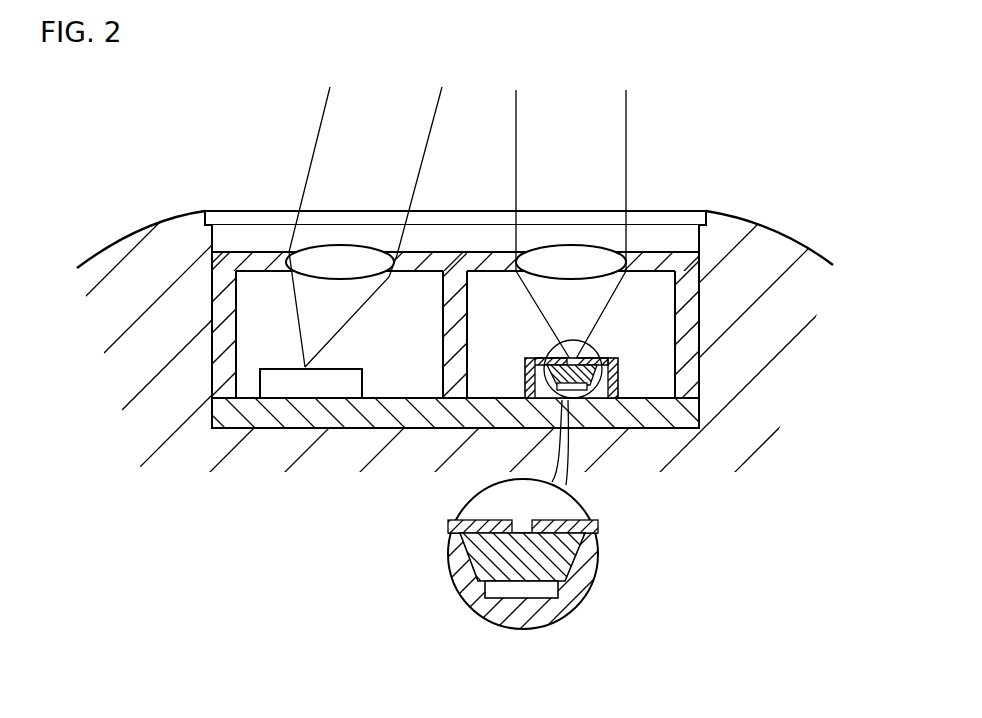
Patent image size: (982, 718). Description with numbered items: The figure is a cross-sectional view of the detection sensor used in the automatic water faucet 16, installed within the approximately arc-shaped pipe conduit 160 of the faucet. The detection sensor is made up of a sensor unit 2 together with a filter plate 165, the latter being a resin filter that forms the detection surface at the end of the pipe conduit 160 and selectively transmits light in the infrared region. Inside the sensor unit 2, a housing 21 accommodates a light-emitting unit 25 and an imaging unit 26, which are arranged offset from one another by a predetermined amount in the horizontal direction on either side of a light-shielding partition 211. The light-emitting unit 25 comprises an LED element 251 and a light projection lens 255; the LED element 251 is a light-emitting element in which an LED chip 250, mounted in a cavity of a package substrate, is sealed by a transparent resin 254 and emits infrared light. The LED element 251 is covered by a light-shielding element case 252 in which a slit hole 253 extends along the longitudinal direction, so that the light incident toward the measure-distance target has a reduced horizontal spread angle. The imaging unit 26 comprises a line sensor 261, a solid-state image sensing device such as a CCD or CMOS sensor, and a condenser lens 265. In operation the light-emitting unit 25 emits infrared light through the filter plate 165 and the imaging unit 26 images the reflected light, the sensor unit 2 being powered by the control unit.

The sensor unit 2 is at (712, 418).
The automatic water faucet 16 is at (131, 206).
The housing 21 is at (712, 322).
The light-emitting unit 25 is at (610, 238).
The imaging unit 26 is at (303, 236).
The pipe conduit 160 is at (792, 226).
The filter plate 165 is at (683, 215).
The partition 211 is at (463, 332).
The LED chip 250 is at (490, 585).
The LED element 251 is at (603, 411).
The element case 252 is at (620, 380).
The slit hole 253 is at (522, 518).
The transparent resin 254 is at (558, 560).
The light projection lens 255 is at (572, 250).
The line sensor 261 is at (285, 388).
The condenser lens 265 is at (343, 247).